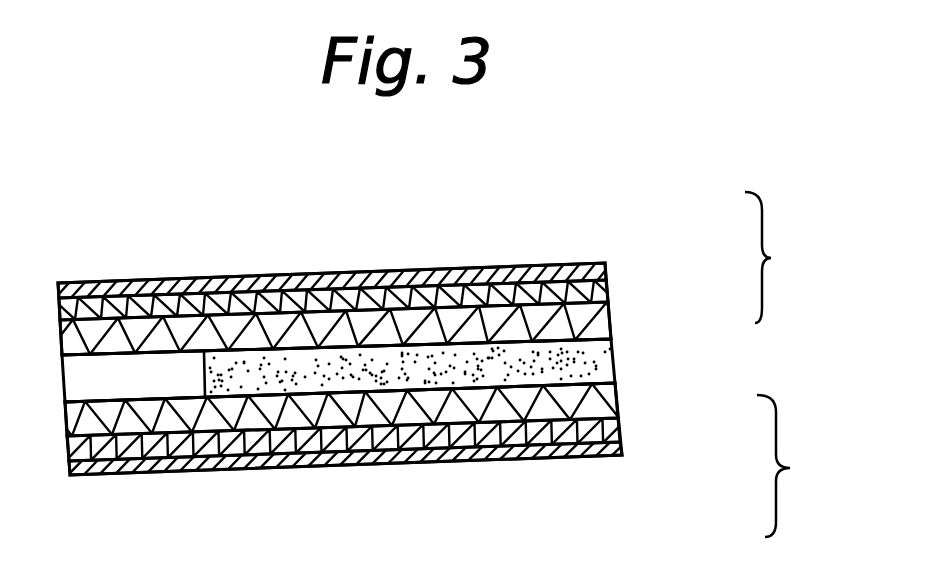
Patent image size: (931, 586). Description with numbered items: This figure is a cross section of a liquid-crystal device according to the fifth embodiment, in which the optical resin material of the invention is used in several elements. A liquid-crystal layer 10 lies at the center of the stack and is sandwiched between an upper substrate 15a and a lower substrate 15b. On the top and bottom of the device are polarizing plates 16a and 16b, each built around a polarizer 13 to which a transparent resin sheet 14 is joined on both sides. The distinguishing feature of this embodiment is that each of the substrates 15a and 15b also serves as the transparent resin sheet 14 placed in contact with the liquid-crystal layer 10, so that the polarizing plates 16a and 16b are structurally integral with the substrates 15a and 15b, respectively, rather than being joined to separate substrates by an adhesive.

The transparent resin sheet 14 is at (612, 262).
The polarizer 13 is at (612, 288).
The substrate 15a is at (612, 320).
The substrate 15b is at (615, 400).
The liquid-crystal layer 10 is at (612, 357).
The polarizing plate 16a is at (451, 273).
The polarizing plate 16b is at (461, 460).